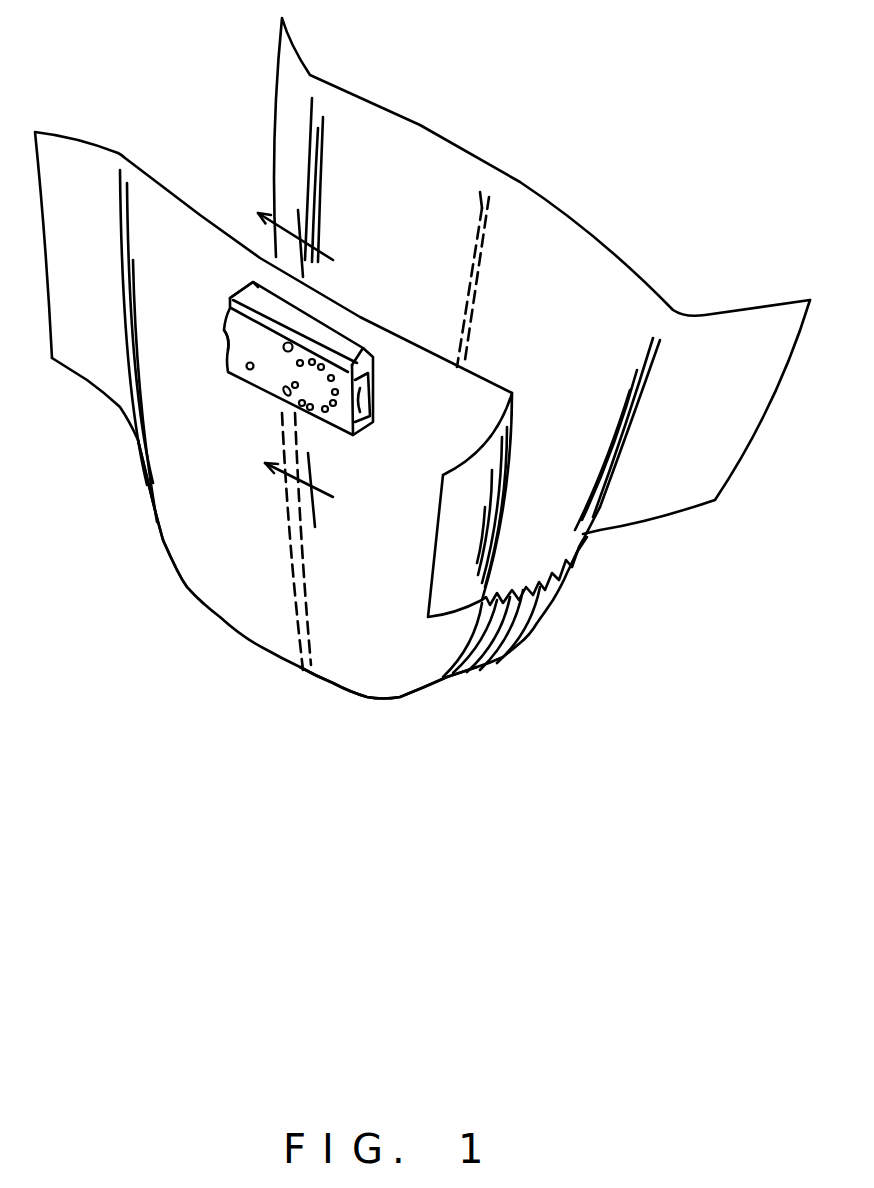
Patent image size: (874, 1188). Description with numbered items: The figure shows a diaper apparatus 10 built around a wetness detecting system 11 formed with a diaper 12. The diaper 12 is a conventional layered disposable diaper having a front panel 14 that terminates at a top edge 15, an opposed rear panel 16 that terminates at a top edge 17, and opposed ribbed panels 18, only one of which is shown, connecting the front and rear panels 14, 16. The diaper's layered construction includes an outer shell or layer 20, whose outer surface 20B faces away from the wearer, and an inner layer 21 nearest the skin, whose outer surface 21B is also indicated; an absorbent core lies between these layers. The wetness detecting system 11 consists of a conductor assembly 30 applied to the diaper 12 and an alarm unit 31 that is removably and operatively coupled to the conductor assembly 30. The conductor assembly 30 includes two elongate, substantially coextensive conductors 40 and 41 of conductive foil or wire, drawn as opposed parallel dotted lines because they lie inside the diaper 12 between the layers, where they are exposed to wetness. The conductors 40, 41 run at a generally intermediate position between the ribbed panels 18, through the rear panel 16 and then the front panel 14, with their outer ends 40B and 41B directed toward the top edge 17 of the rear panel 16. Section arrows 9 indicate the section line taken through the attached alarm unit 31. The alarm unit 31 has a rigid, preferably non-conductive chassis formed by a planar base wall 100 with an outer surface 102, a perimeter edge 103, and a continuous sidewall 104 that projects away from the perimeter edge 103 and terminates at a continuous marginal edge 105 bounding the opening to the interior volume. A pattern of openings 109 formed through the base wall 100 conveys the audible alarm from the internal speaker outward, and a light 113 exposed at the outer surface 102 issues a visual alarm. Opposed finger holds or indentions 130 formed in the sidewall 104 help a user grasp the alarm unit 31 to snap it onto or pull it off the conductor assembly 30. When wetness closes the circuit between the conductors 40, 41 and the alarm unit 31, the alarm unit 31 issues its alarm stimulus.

The diaper apparatus 10 is at (613, 85).
The wetness detecting system 11 is at (210, 287).
The diaper 12 is at (185, 582).
The front panel 14 is at (157, 483).
The top edge 15 is at (483, 378).
The rear panel 16 is at (583, 532).
The top edge 17 is at (630, 263).
The ribbed panels 18 is at (520, 617).
The outer shell or layer 20 is at (340, 625).
The outer surface 20B is at (227, 522).
The inner layer 21 is at (547, 260).
The outer surface 21B is at (392, 187).
The conductor assembly 30 is at (306, 598).
The alarm unit 31 is at (378, 351).
The conductor 40 is at (303, 574).
The outer end 40B is at (483, 195).
The conductor 41 is at (293, 612).
The outer end 41B is at (489, 197).
The section line 9 is at (308, 364).
The base wall 100 is at (233, 368).
The outer surface 102 is at (367, 433).
The perimeter edge 103 is at (247, 280).
The continuous sidewall 104 is at (327, 333).
The marginal edge 105 is at (317, 320).
The pattern of openings 109 is at (283, 412).
The light 113 is at (222, 390).
The finger holds or indentions 130 is at (228, 337).